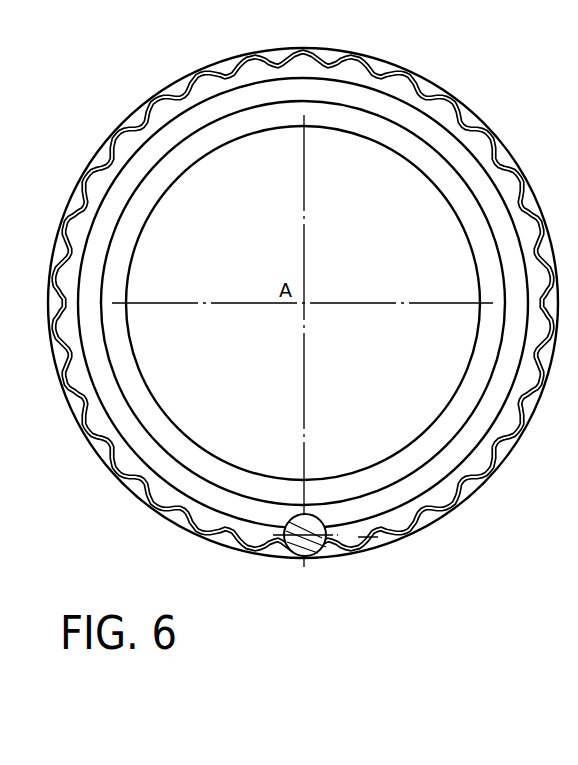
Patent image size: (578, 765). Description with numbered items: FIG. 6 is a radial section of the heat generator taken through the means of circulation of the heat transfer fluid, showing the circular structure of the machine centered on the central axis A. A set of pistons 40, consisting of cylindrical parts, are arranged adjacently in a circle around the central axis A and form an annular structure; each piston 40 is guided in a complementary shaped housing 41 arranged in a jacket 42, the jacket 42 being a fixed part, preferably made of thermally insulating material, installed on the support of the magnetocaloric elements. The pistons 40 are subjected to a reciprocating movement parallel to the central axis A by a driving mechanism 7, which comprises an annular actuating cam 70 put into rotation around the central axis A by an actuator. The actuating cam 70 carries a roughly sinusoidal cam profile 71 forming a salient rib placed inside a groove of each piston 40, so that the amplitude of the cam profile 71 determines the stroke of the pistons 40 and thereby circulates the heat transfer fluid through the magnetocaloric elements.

The driving mechanism 7 is at (176, 421).
The piston 40 is at (287, 553).
The housing 41 is at (387, 547).
The jacket 42 is at (140, 110).
The actuating cam 70 is at (172, 442).
The cam profile 71 is at (178, 480).